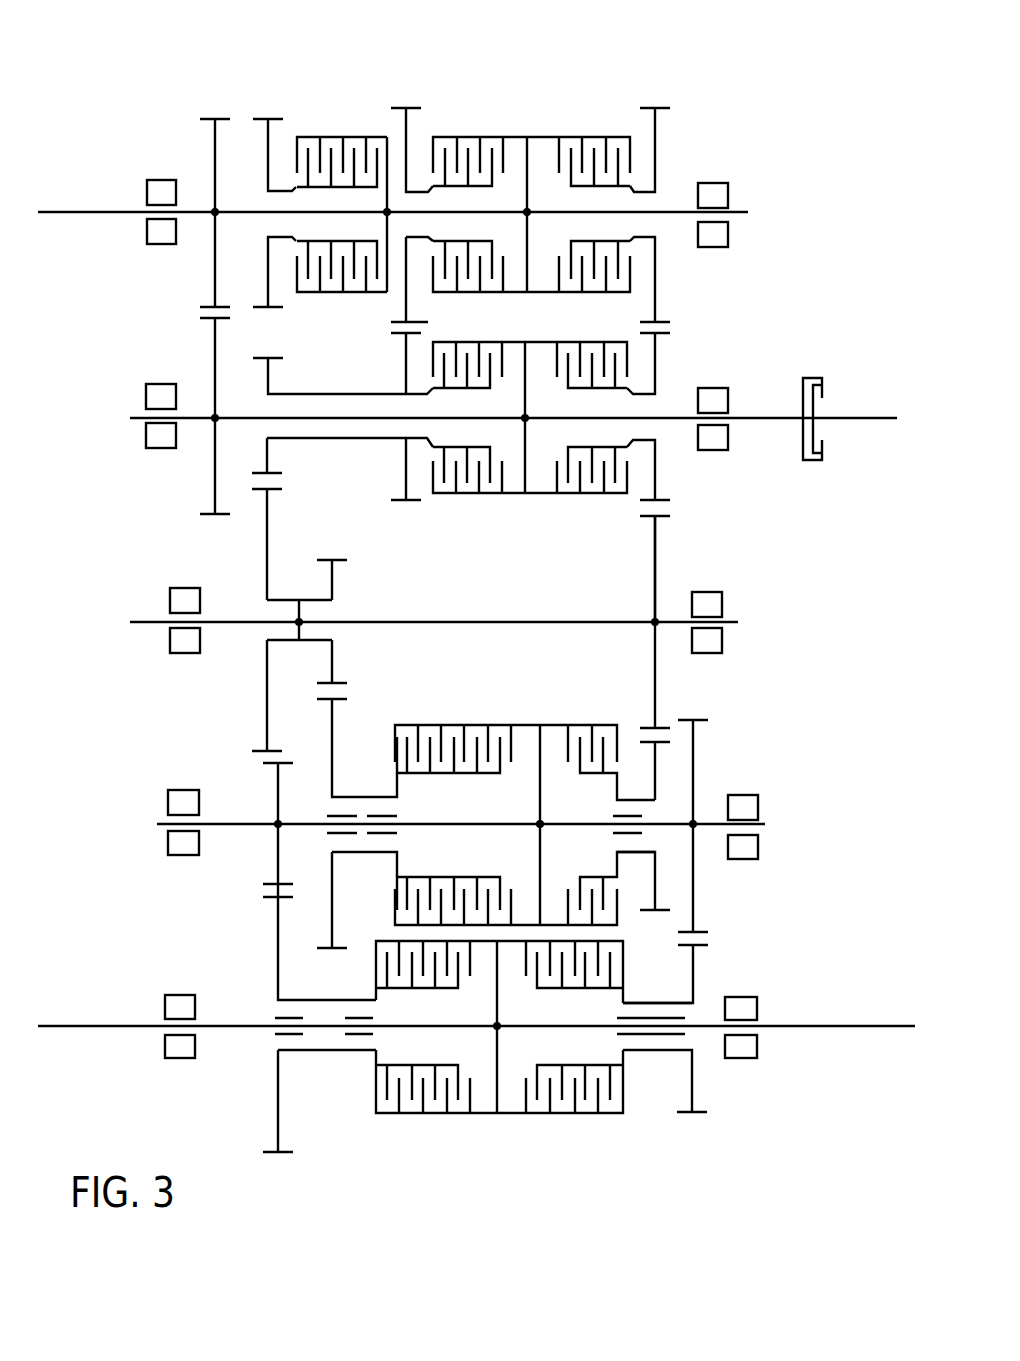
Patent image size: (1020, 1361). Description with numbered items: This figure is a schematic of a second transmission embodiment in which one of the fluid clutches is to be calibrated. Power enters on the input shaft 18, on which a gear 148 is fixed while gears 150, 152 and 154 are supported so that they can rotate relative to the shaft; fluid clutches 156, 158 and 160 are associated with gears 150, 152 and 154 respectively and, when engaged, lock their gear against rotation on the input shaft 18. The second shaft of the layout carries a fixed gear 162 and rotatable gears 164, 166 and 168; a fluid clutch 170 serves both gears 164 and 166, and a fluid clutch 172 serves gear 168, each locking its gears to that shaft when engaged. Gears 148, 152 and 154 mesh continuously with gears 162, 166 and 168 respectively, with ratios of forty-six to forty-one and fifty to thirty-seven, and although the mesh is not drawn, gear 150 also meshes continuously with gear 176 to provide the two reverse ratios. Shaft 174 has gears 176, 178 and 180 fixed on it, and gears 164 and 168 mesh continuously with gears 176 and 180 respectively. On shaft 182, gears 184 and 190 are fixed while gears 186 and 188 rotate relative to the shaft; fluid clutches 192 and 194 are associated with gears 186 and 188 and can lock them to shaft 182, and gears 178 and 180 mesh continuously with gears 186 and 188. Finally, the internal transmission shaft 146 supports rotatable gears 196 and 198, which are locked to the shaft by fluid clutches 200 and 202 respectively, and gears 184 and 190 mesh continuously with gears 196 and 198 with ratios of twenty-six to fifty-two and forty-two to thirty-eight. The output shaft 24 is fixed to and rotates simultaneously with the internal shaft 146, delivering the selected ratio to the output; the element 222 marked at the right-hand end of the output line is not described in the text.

The input shaft 18 is at (108, 211).
The output shaft 24 is at (110, 1025).
The internal transmission shaft 146 is at (706, 1000).
The gear 148 is at (217, 100).
The gear 150 is at (269, 100).
The gear 152 is at (408, 86).
The gear 154 is at (656, 88).
The fluid clutch 156 is at (336, 118).
The fluid clutch 158 is at (469, 118).
The fluid clutch 160 is at (588, 118).
The gear 162 is at (210, 330).
The gear 164 is at (270, 378).
The gear 166 is at (402, 455).
The gear 168 is at (660, 470).
The fluid clutch 170 is at (438, 496).
The fluid clutch 172 is at (567, 496).
The shaft 174 is at (672, 595).
The gear 176 is at (265, 543).
The gear 178 is at (333, 590).
The gear 180 is at (655, 596).
The shaft 182 is at (700, 822).
The gear 184 is at (275, 855).
The gear 186 is at (333, 724).
The gear 188 is at (657, 865).
The gear 190 is at (695, 743).
The fluid clutch 192 is at (452, 724).
The fluid clutch 194 is at (580, 724).
The gear 196 is at (273, 1102).
The gear 198 is at (692, 1078).
The fluid clutch 200 is at (435, 1117).
The fluid clutch 202 is at (536, 1117).
The output shaft end 222 is at (805, 1025).